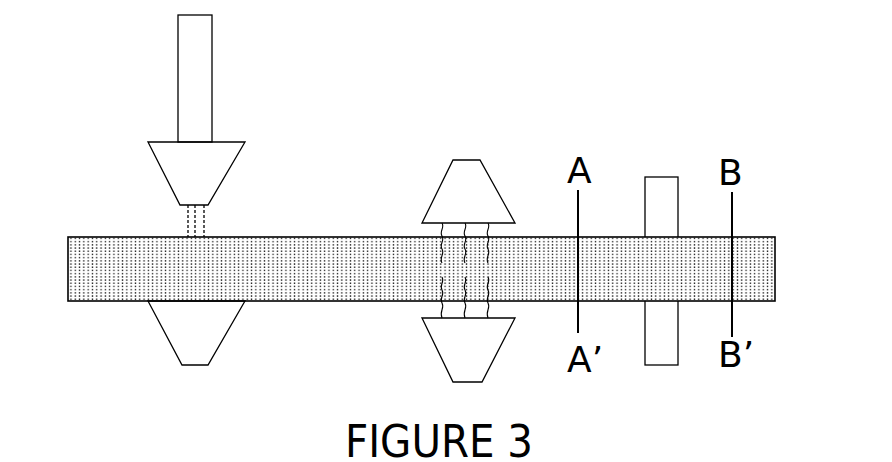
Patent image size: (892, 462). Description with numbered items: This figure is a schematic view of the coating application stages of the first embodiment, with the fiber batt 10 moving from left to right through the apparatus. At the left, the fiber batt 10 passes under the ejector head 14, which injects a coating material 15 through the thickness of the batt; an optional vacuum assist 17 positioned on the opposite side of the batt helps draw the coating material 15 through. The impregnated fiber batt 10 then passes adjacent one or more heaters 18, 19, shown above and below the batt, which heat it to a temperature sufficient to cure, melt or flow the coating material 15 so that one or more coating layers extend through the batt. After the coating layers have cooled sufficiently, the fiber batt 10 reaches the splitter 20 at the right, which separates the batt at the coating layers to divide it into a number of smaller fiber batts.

The fiber batt 10 is at (316, 278).
The ejector head 14 is at (247, 141).
The coating material 15 is at (208, 222).
The vacuum assist 17 is at (158, 330).
The heater 18 is at (431, 193).
The heater 19 is at (430, 345).
The splitter 20 is at (662, 175).